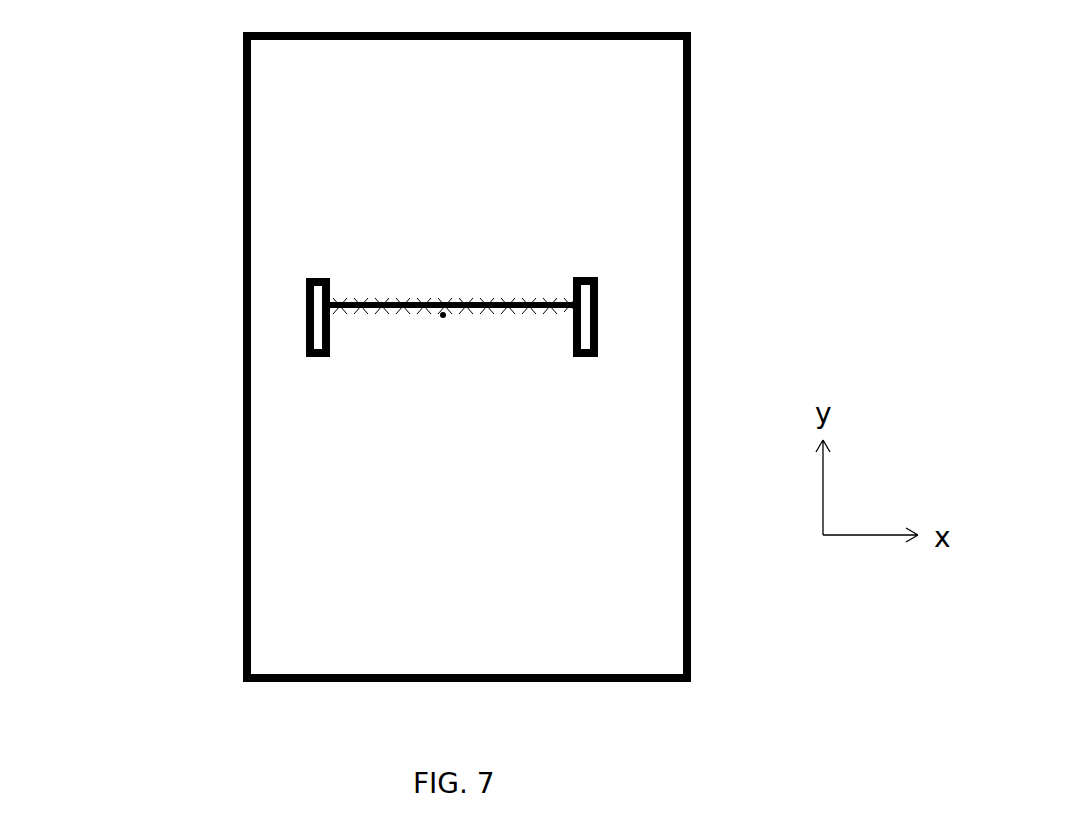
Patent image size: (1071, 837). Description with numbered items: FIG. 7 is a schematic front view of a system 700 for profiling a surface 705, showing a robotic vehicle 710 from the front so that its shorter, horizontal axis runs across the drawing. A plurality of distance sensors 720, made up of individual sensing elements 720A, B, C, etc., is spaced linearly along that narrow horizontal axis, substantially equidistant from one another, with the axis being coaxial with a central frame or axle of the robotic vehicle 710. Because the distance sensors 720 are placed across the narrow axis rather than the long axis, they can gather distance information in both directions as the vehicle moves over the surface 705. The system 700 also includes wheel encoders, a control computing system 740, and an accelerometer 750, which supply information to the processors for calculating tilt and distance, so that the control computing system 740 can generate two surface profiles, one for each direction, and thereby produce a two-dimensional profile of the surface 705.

The system 700 is at (98, 136).
The surface 705 is at (243, 468).
The robotic vehicle 710 is at (306, 335).
The distance sensors 720 is at (378, 312).
The sensing elements 720A, B, C, etc. 720A is at (382, 302).
The control computing system 740 is at (462, 305).
The accelerometer 750 is at (443, 315).